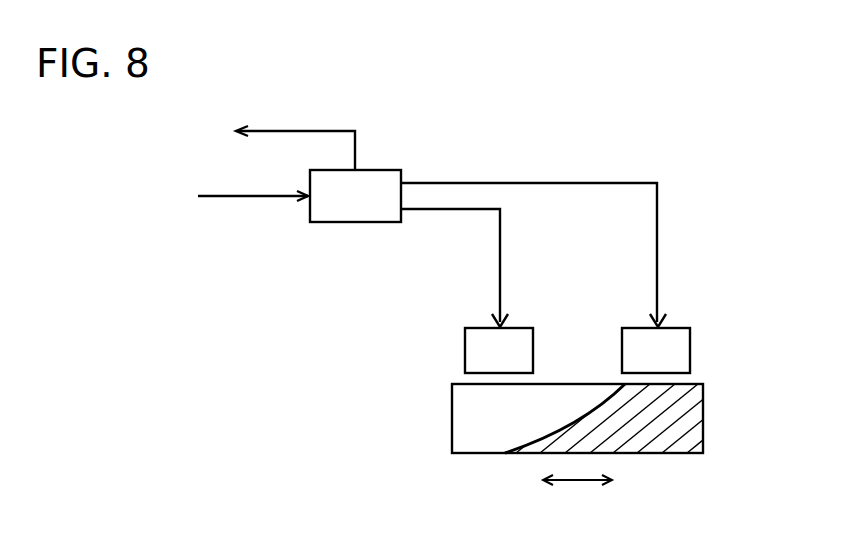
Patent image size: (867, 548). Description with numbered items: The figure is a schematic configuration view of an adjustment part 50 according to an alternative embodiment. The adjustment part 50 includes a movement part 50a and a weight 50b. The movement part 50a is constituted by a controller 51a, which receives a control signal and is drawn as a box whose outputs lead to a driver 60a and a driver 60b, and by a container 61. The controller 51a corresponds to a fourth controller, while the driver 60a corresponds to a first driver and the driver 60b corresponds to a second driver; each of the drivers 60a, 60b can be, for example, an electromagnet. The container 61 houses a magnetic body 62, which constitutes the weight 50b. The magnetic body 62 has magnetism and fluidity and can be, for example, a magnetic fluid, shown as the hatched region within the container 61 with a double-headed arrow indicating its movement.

The adjustment part 50 is at (304, 118).
The movement part 50a is at (707, 53).
The weight 50b is at (638, 418).
The controller 51a is at (389, 183).
The driver 60a is at (519, 338).
The driver 60b is at (678, 337).
The container 61 is at (704, 399).
The magnetic body 62 is at (662, 417).